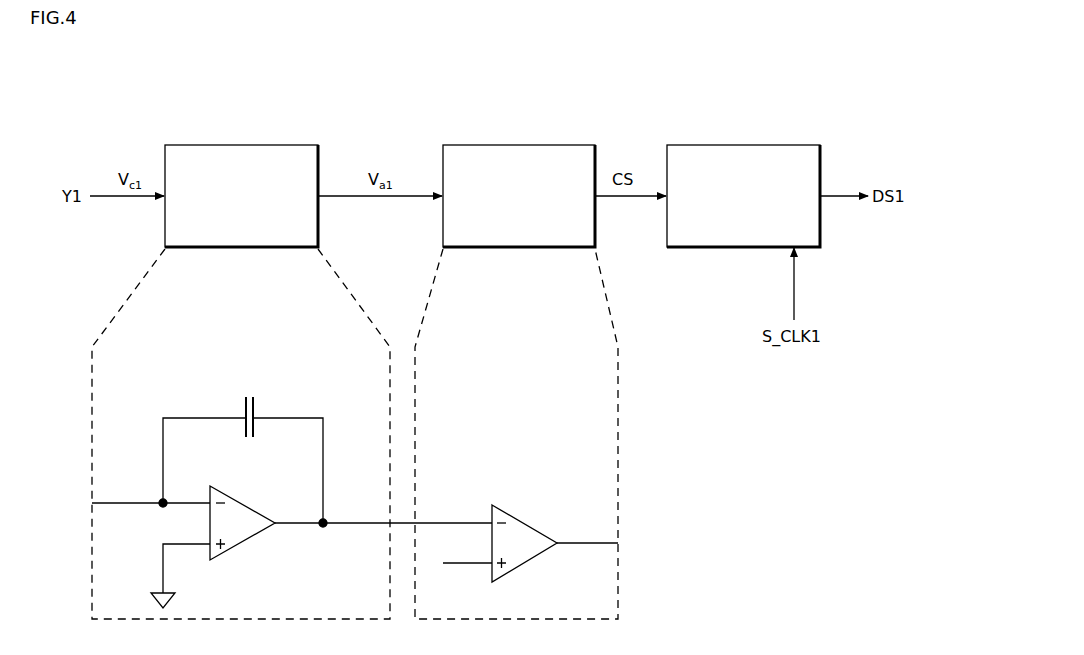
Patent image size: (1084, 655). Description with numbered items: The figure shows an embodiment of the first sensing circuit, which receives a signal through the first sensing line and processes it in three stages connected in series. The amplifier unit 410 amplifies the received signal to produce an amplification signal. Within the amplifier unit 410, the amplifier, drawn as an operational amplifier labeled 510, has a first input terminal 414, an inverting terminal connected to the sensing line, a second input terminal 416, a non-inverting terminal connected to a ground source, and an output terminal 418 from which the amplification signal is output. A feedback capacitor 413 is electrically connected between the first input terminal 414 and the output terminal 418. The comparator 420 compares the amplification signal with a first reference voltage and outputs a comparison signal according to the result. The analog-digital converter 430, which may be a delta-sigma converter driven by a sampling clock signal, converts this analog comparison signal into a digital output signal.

The amplifier unit 410 is at (262, 145).
The comparator 420 is at (540, 145).
The analog-digital converter 430 is at (765, 145).
The feedback capacitor 413 is at (257, 404).
The first input terminal 414 is at (186, 501).
The second input terminal 416 is at (182, 546).
The output terminal 418 is at (293, 525).
The operational amplifier 510 is at (224, 489).